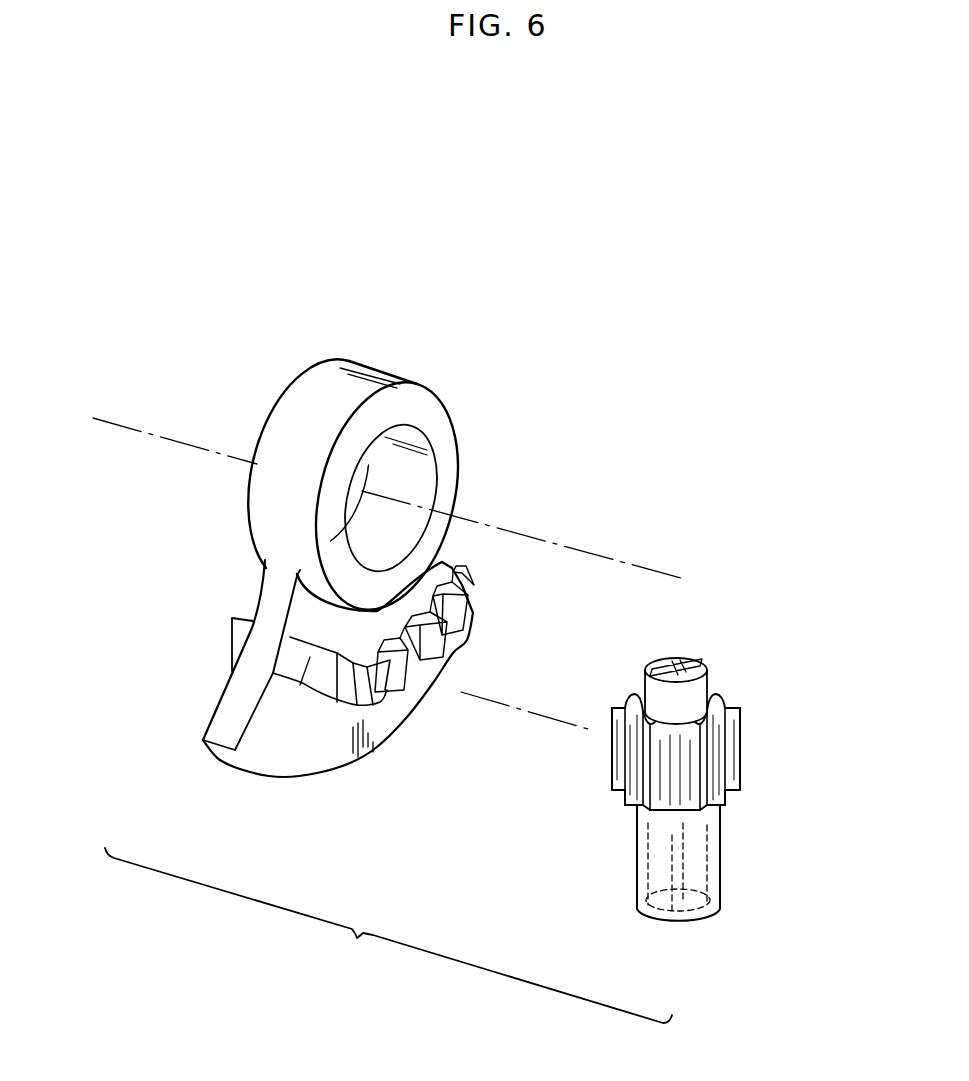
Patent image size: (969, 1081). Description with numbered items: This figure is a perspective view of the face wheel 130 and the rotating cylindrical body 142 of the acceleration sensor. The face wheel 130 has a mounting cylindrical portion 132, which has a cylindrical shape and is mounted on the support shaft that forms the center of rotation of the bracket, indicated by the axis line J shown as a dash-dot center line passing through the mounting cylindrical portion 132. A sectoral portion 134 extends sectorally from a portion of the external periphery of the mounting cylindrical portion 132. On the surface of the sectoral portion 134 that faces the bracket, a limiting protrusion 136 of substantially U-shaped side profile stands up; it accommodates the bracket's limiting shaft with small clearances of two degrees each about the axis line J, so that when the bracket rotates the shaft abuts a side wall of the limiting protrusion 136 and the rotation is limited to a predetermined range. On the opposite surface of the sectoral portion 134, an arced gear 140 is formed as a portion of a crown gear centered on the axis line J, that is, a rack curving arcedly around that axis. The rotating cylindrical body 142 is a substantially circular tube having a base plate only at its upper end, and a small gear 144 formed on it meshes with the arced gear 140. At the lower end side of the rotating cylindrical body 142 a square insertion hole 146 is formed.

The face wheel 130 is at (257, 560).
The mounting cylindrical portion 132 is at (445, 440).
The sectoral portion 134 is at (312, 760).
The limiting protrusion 136 is at (229, 648).
The arced gear 140 is at (468, 600).
The rotating cylindrical body 142 is at (722, 861).
The small gear 144 is at (742, 745).
The square insertion hole 146 is at (653, 907).
The axis line J is at (552, 540).